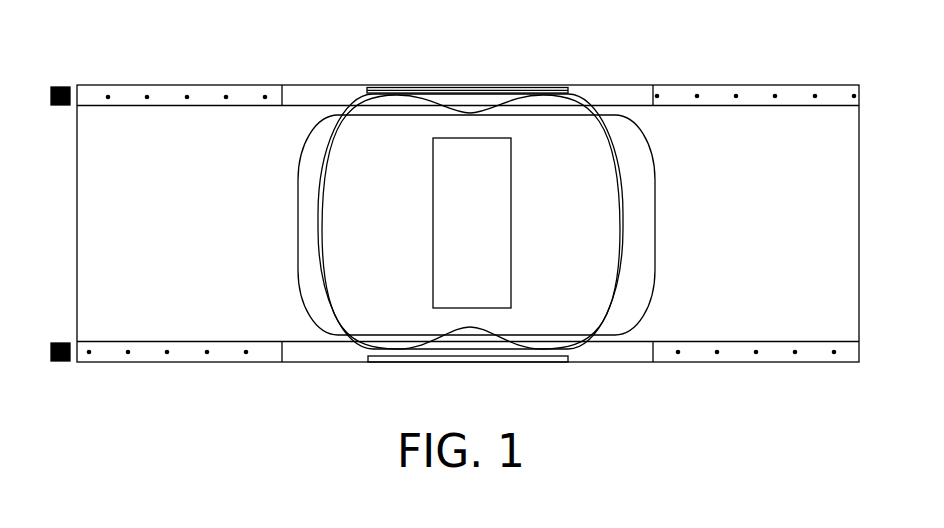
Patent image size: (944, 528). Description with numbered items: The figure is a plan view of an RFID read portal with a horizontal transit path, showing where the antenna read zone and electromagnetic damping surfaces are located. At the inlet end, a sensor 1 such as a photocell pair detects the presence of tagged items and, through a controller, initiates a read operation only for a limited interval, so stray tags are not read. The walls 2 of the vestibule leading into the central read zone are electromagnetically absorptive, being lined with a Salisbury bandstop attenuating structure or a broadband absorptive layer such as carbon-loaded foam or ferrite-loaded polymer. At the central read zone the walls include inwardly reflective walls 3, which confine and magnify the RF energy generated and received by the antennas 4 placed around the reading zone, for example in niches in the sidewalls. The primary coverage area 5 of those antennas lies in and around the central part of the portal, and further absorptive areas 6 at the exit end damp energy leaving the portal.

The sensor 1 is at (62, 85).
The walls 2 is at (237, 83).
The reflective walls 3 is at (343, 85).
The antennas 4 is at (540, 83).
The area 5 is at (655, 202).
The absorptive areas 6 is at (733, 341).